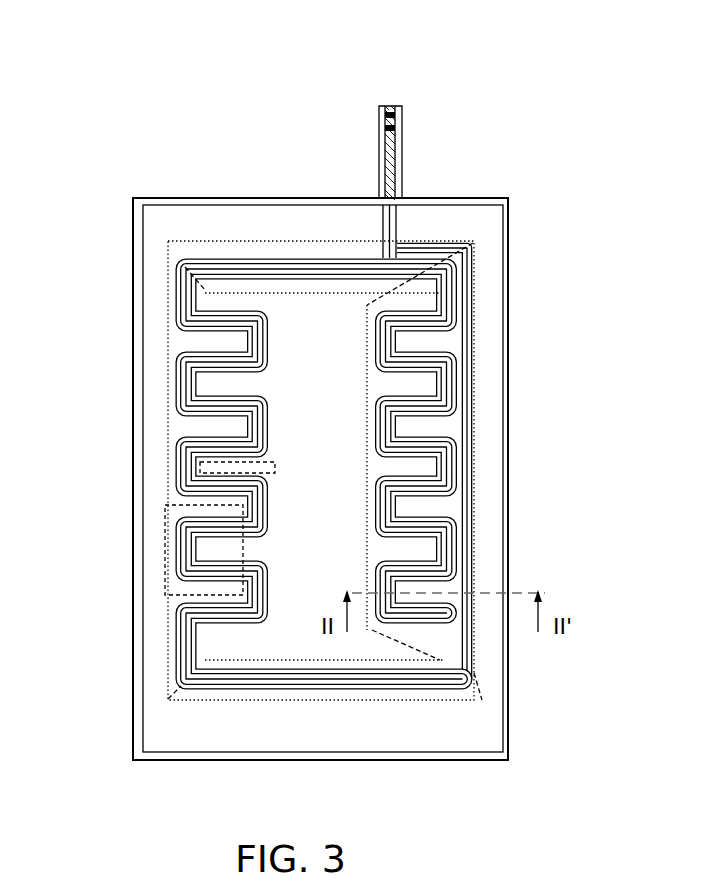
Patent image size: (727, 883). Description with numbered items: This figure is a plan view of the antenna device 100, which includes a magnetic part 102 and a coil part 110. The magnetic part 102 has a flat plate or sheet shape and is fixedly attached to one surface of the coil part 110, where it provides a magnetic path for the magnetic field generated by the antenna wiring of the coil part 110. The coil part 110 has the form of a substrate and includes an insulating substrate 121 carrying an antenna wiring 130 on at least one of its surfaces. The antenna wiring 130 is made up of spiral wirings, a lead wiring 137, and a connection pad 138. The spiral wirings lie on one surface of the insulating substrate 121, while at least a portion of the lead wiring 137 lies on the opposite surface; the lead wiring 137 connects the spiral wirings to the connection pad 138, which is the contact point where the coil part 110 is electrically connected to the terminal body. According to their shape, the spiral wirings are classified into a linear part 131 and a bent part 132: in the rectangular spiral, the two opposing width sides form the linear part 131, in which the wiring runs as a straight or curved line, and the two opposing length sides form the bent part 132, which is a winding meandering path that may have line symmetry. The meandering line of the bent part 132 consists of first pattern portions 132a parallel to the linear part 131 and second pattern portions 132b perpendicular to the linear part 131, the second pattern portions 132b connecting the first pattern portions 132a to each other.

The antenna device 100 is at (358, 30).
The magnetic part 102 is at (508, 365).
The coil part 110 is at (517, 694).
The insulating substrate 121 is at (503, 312).
The antenna wiring 130 is at (470, 233).
The linear part 131 is at (238, 240).
The bent part 132 is at (475, 424).
The first pattern portions 132a is at (198, 468).
The second pattern portions 132b is at (165, 560).
The lead wiring 137 is at (385, 242).
The connection pad 138 is at (402, 128).